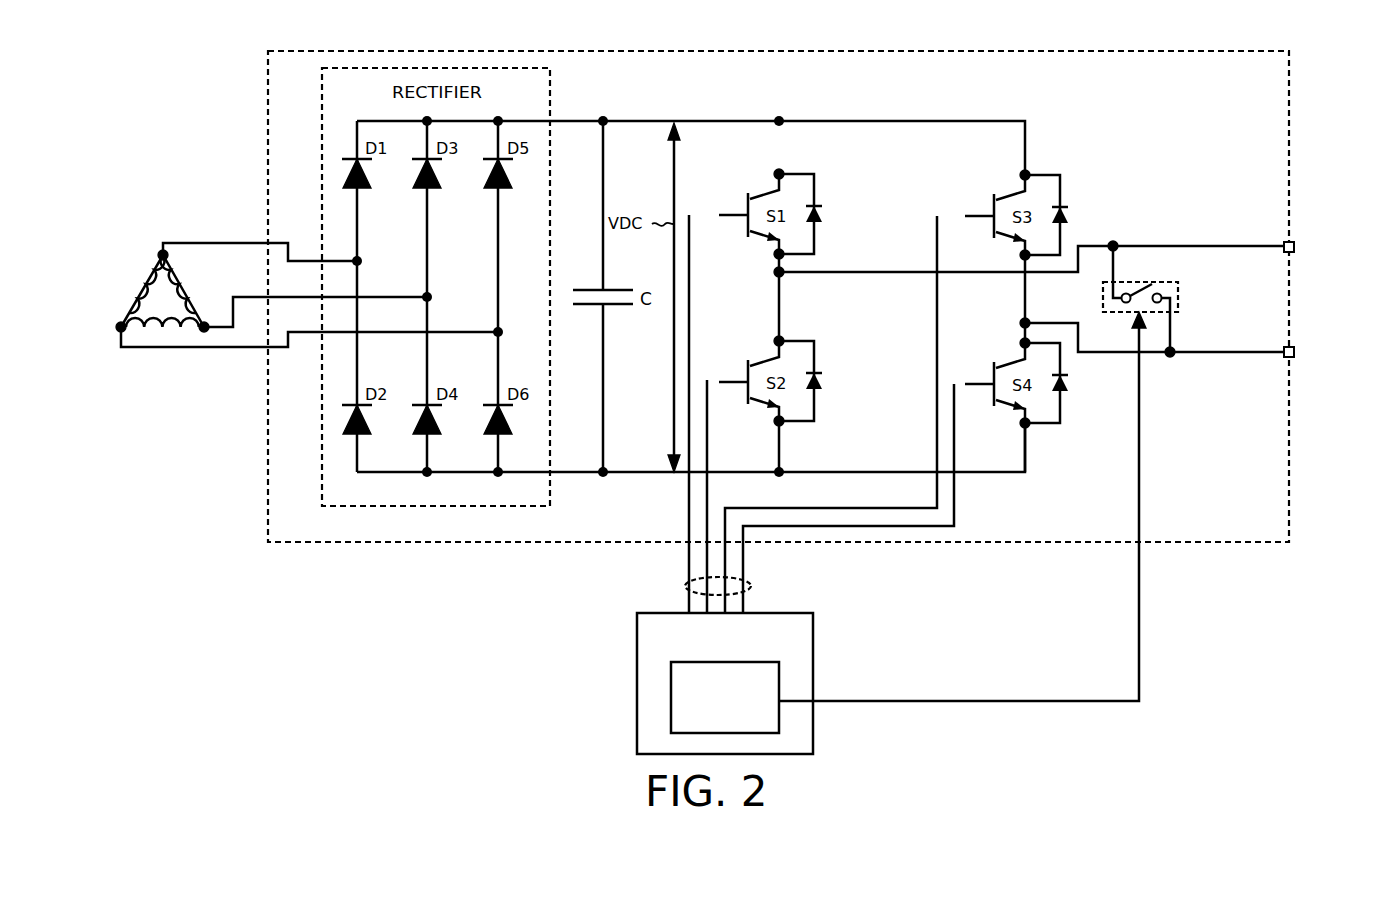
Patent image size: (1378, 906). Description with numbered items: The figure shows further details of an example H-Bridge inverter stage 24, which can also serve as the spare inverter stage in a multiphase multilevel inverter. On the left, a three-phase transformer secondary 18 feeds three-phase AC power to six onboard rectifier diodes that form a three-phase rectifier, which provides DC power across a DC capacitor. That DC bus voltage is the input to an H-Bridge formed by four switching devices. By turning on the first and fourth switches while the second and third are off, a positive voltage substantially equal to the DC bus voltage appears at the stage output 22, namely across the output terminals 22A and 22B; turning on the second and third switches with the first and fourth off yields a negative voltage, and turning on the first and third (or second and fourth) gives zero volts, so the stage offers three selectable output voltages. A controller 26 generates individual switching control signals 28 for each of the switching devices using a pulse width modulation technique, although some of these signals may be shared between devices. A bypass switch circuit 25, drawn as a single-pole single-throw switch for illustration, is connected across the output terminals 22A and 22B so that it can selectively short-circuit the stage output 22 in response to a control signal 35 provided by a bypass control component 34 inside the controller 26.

The transformer secondary 18 is at (123, 252).
The stage output 22 is at (1322, 270).
The output terminal 22A is at (1296, 246).
The output terminal 22B is at (1296, 352).
The H-Bridge inverter stage 24 is at (781, 51).
The bypass switch circuit 25 is at (1160, 282).
The controller 26 is at (701, 683).
The switching control signals 28 is at (685, 586).
The bypass control component 34 is at (671, 700).
The control signal 35 is at (870, 700).